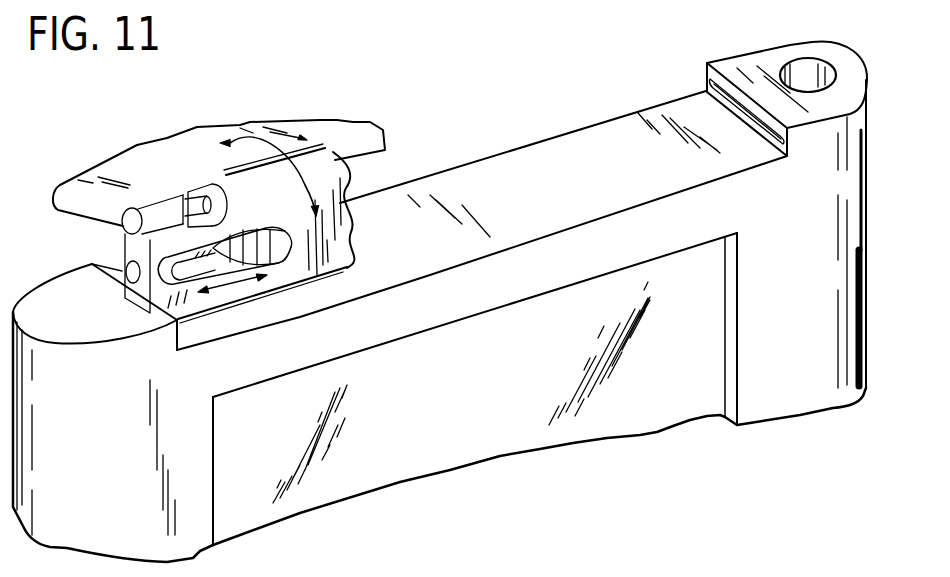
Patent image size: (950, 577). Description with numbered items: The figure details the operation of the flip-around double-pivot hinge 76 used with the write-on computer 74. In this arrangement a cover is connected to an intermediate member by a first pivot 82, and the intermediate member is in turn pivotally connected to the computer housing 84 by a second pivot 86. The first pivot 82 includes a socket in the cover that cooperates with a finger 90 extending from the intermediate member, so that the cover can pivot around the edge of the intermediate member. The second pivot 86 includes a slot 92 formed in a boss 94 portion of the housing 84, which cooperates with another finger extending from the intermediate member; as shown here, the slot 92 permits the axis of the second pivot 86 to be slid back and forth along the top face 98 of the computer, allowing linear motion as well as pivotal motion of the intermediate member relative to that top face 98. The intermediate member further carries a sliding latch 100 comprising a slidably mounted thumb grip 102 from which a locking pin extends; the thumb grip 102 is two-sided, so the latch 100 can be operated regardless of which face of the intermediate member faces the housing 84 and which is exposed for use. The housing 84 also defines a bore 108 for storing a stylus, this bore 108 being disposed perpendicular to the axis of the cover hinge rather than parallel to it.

The write-on computer 74 is at (371, 169).
The flip-around double-pivot hinge 76 is at (355, 234).
The first pivot 82 is at (148, 185).
The computer housing 84 is at (865, 183).
The second pivot 86 is at (145, 312).
The finger 90 is at (187, 191).
The slot 92 is at (729, 106).
The boss 94 is at (750, 53).
The top face 98 is at (510, 209).
The sliding latch 100 is at (280, 270).
The thumb grip 102 is at (263, 242).
The bore 108 is at (794, 58).